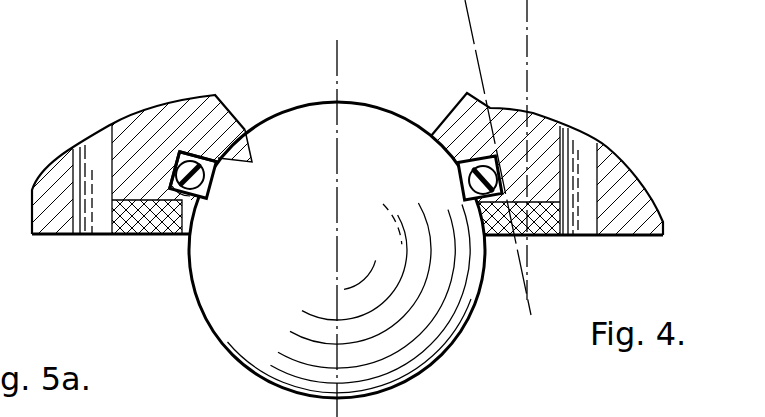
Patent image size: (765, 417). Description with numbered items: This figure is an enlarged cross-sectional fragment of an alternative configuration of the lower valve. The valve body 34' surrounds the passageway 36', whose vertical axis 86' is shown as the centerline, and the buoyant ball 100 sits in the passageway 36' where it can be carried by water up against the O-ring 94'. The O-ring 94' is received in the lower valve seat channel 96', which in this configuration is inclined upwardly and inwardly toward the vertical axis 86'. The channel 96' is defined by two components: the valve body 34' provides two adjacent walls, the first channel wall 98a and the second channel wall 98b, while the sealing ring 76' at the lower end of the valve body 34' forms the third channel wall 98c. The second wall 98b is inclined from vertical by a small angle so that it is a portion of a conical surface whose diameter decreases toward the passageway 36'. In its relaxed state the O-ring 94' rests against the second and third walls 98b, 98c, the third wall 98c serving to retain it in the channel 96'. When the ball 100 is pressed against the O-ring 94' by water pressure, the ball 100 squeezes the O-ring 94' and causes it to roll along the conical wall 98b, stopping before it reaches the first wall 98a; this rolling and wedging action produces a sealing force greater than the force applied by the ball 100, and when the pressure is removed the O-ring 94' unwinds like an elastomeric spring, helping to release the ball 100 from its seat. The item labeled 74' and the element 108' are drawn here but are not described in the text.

The valve body 34' is at (547, 157).
The passageway 36' is at (229, 155).
The laminated member 74' is at (85, 213).
The sealing ring 76' is at (147, 240).
The vertical axis 86' is at (358, 228).
The O-ring 94' is at (460, 185).
The lower valve seat channel 96' is at (136, 118).
The first channel wall 98a is at (188, 150).
The second channel wall 98b is at (173, 163).
The third channel wall 98c is at (168, 193).
The buoyant ball 100 is at (303, 258).
The tab 108' is at (260, 113).